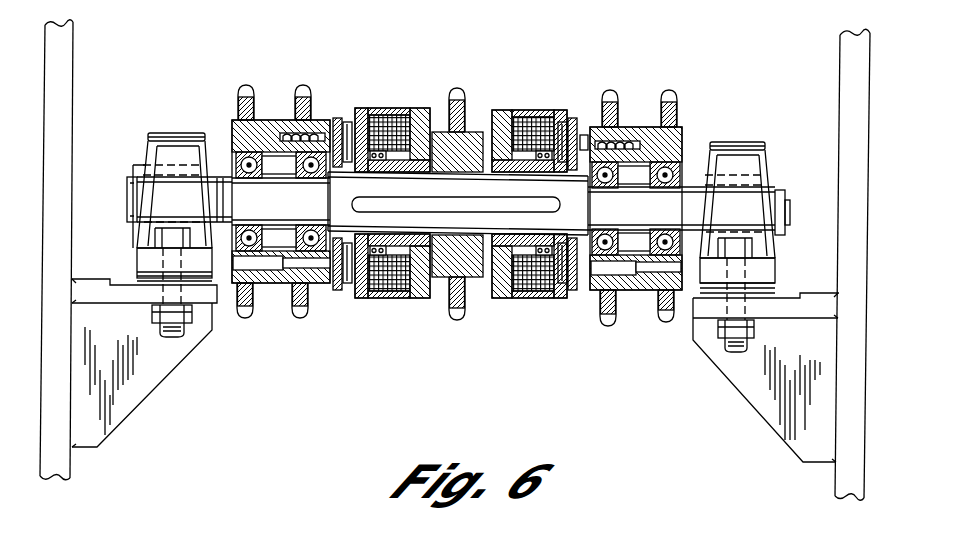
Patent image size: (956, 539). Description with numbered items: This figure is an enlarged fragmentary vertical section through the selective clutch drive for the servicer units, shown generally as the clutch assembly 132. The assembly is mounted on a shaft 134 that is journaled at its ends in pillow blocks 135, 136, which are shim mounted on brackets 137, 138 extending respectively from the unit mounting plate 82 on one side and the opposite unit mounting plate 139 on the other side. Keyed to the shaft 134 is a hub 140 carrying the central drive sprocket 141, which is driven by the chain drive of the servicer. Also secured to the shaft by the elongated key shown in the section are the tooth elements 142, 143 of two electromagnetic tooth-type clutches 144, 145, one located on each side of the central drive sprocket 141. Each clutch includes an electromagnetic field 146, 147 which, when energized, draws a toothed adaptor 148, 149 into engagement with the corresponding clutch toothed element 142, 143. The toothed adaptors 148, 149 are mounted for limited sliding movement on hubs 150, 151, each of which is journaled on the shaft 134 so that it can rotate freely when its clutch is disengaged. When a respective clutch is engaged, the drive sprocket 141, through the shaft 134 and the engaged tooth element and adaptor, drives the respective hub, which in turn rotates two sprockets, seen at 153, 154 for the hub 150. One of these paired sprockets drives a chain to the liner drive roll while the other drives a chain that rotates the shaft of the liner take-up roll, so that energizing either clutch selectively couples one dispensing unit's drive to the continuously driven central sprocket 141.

The inboard support plate 82 is at (69, 39).
The clutch assembly 132 is at (458, 184).
The shaft 134 is at (222, 176).
The pillow block 135 is at (168, 133).
The pillow block 136 is at (742, 142).
The bracket 137 is at (158, 372).
The bracket 138 is at (753, 397).
The opposite unit mounting plate 139 is at (843, 53).
The hub 140 is at (451, 241).
The sprocket 141 is at (461, 313).
The tooth element 142 is at (352, 117).
The tooth element 143 is at (563, 121).
The electromagnetic tooth-type clutch 144 is at (385, 99).
The electromagnetic tooth-type clutch 145 is at (517, 96).
The electromagnetic field 146 is at (388, 291).
The electromagnetic field 147 is at (519, 299).
The toothed adaptor 148 is at (336, 290).
The toothed adaptor 149 is at (570, 293).
The hub 150 is at (278, 284).
The hub 151 is at (642, 298).
The sprocket 153 is at (245, 85).
The sprocket 154 is at (302, 85).